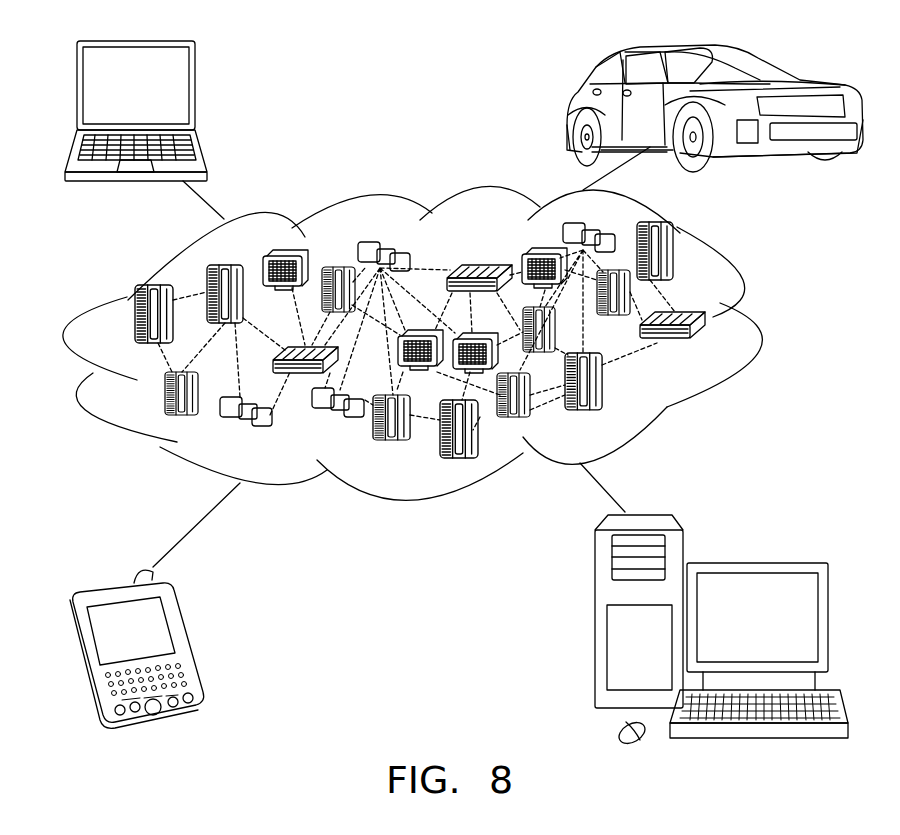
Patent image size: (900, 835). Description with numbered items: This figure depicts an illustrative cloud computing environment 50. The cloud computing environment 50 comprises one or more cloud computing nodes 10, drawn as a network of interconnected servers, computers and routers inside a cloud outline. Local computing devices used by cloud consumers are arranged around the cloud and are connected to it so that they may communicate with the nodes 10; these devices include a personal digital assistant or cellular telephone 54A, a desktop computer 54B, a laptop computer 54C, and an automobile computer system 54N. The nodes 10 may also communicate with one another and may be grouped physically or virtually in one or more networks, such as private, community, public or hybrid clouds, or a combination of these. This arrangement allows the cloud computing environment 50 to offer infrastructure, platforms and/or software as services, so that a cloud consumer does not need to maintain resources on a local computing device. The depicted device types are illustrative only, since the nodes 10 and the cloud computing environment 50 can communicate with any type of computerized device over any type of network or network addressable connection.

The cloud computing node 10 is at (707, 350).
The cloud computing environment 50 is at (757, 323).
The personal digital assistant or cellular telephone 54A is at (187, 642).
The desktop computer 54B is at (753, 563).
The laptop computer 54C is at (195, 95).
The automobile computer system 54N is at (567, 108).